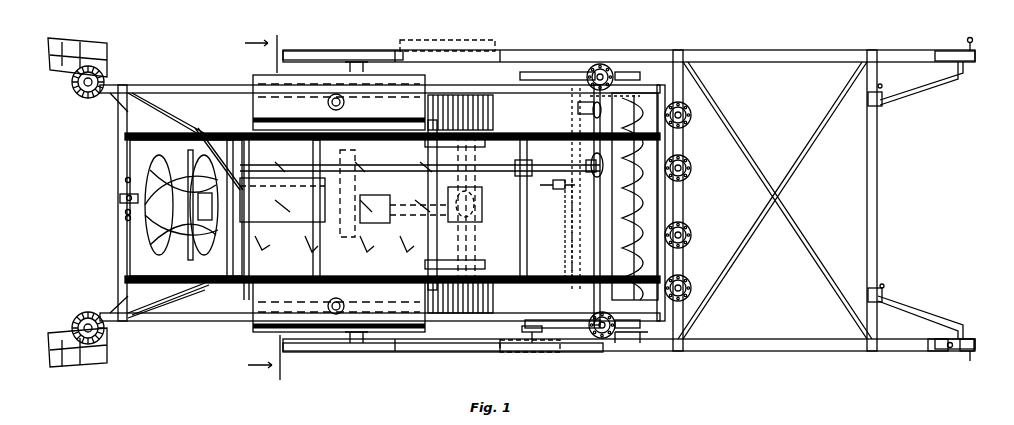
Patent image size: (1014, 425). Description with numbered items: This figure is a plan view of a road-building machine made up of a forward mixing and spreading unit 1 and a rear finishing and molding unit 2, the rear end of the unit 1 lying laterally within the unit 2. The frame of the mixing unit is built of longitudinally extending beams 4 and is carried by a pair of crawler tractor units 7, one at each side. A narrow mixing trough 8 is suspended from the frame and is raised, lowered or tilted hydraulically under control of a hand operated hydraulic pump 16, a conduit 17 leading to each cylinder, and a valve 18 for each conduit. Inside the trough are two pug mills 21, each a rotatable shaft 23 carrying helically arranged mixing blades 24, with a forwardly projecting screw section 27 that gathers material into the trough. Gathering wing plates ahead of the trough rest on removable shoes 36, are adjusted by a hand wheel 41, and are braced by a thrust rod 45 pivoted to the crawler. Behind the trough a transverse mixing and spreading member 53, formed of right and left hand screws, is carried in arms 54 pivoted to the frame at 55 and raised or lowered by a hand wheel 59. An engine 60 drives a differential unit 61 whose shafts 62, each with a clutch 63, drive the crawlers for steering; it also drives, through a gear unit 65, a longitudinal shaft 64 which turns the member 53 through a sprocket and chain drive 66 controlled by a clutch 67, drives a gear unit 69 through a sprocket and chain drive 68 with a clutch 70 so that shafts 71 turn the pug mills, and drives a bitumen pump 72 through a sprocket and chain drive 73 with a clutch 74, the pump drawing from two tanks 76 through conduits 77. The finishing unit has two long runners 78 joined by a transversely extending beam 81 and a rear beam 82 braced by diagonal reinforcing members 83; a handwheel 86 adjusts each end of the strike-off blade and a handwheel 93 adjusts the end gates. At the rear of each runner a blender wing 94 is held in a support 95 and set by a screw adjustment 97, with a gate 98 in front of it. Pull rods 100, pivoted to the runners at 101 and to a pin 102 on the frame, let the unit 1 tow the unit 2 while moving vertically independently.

The mixing and spreading unit 1 is at (482, 88).
The finishing and molding unit 2 is at (662, 58).
The longitudinally extending beams 4 is at (208, 333).
The crawler tractor units 7 is at (440, 300).
The mixing trough 8 is at (272, 323).
The hand operated hydraulic pump 16 is at (120, 199).
The conduit 17 is at (128, 152).
The valve 18 is at (126, 214).
The pug mills 21 is at (400, 262).
The rotatable shaft 23 is at (403, 183).
The mixing blades 24 is at (358, 262).
The screw section 27 is at (160, 168).
The removable shoe 36 is at (100, 55).
The hand wheel 41 is at (72, 90).
The thrust rod 45 is at (165, 312).
The mixing and spreading member 53 is at (640, 160).
The arms 54 is at (630, 345).
The pivotal connection 55 is at (532, 345).
The hand wheel 59 is at (602, 68).
The engine 60 is at (272, 240).
The differential unit 61 is at (482, 208).
The shaft 62 is at (480, 152).
The clutch 63 is at (480, 130).
The longitudinally extending shaft 64 is at (370, 170).
The gear unit 65 is at (340, 202).
The sprocket and chain drive 66 is at (588, 122).
The clutch 67 is at (585, 160).
The sprocket and chain drive 68 is at (560, 190).
The gear unit 69 is at (596, 212).
The clutch 70 is at (570, 243).
The forwardly extending shafts 71 is at (540, 176).
The pump 72 is at (240, 212).
The sprocket and chain drive 73 is at (205, 150).
The clutch 74 is at (272, 140).
The tanks 76 is at (250, 322).
The conduits 77 is at (222, 282).
The runners 78 is at (743, 351).
The transversely extending beam 81 is at (686, 212).
The transversely extending beam 82 is at (877, 192).
The diagonal reinforcing members 83 is at (798, 232).
The handwheel 86 is at (688, 282).
The handwheel 93 is at (692, 235).
The blender wing 94 is at (935, 312).
The support 95 is at (884, 292).
The screw adjustment 97 is at (968, 360).
The gate 98 is at (946, 353).
The pull rods 100 is at (422, 352).
The pivotal connection 101 is at (560, 350).
The pin 102 is at (357, 352).